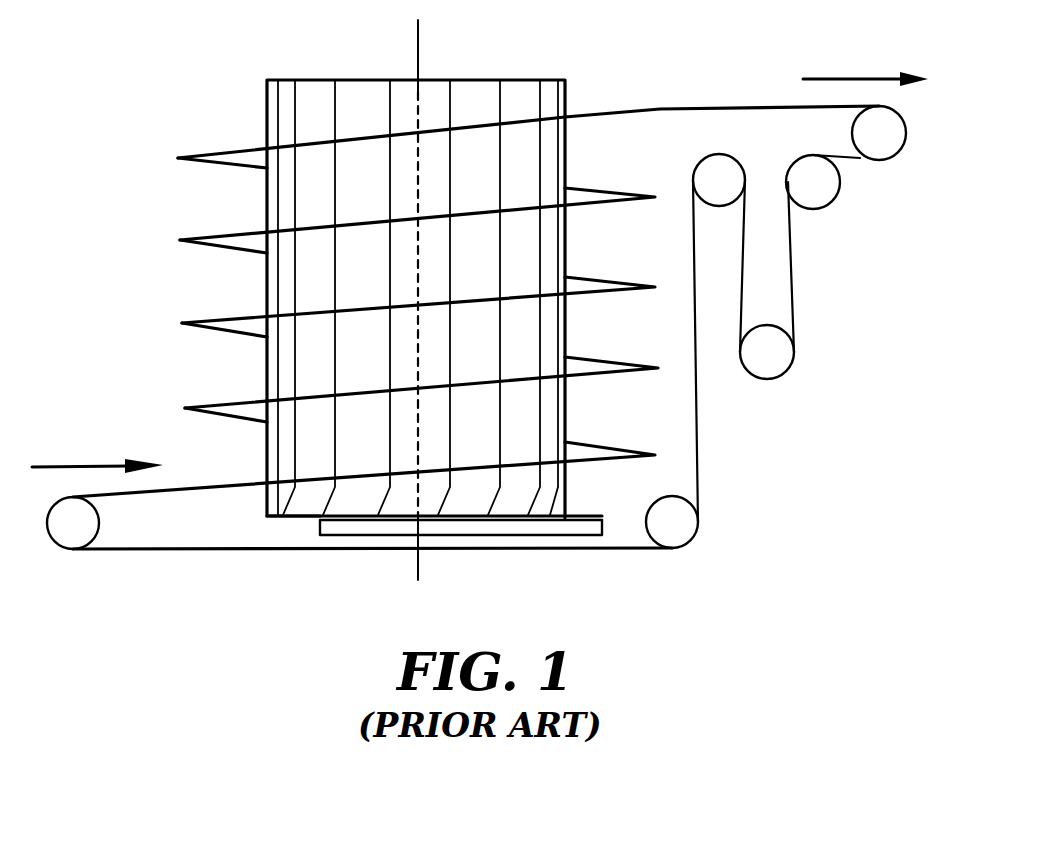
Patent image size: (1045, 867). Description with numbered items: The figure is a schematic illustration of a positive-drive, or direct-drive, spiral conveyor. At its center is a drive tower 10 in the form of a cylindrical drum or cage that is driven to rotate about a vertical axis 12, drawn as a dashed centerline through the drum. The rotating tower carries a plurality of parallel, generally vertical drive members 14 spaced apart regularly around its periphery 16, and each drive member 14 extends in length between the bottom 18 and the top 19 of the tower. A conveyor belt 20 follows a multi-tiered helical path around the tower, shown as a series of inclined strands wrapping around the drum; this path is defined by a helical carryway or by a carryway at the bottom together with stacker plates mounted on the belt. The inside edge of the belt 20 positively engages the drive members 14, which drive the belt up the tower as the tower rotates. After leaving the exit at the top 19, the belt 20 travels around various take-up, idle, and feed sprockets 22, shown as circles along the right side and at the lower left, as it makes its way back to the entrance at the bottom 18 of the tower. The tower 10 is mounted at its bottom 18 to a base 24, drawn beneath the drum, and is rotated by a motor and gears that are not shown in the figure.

The drive tower 10 is at (475, 88).
The vertical axis 12 is at (417, 35).
The drive members 14 is at (335, 93).
The periphery 16 is at (549, 157).
The bottom 18 is at (303, 520).
The top 19 is at (548, 78).
The conveyor belt 20 is at (228, 150).
The sprockets 22 is at (693, 157).
The base 24 is at (523, 527).